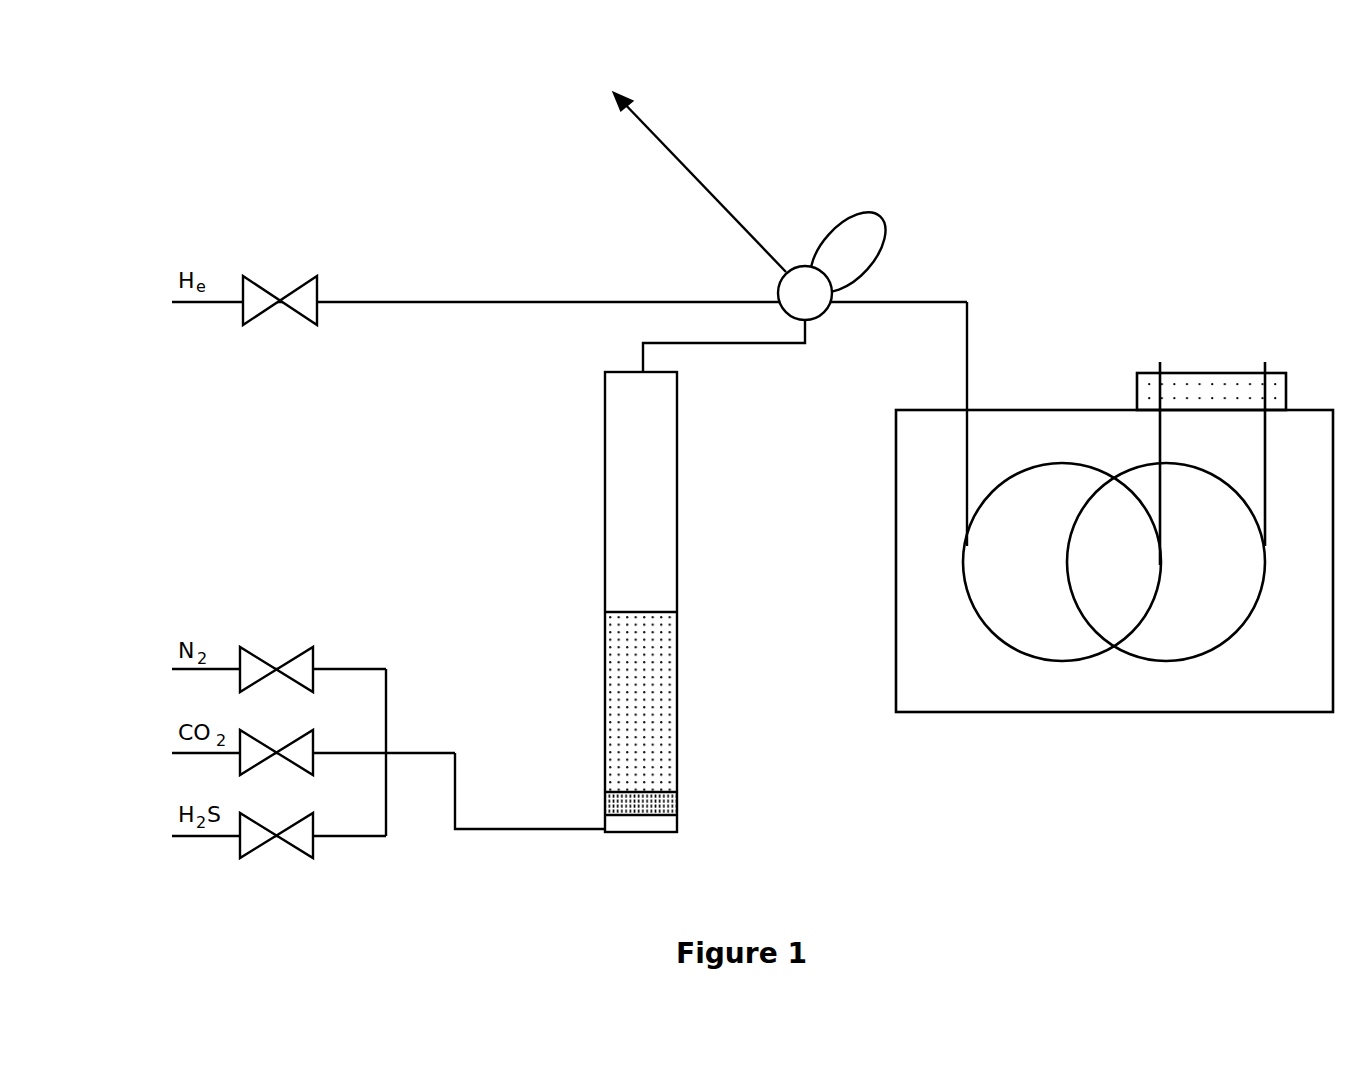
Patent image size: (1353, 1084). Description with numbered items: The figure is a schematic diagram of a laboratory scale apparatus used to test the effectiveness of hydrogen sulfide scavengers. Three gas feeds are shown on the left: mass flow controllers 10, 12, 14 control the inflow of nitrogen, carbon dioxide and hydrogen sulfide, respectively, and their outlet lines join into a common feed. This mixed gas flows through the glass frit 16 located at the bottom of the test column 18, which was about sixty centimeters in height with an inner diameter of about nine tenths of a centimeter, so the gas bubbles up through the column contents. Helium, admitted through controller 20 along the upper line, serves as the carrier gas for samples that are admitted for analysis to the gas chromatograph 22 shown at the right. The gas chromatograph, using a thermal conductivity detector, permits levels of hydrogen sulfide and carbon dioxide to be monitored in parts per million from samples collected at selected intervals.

The mass flow controller 10 is at (314, 660).
The mass flow controller 12 is at (314, 743).
The mass flow controller 14 is at (314, 826).
The glass frit 16 is at (677, 803).
The test column 18 is at (677, 570).
The controller 20 is at (317, 289).
The gas chromatograph 22 is at (1132, 702).